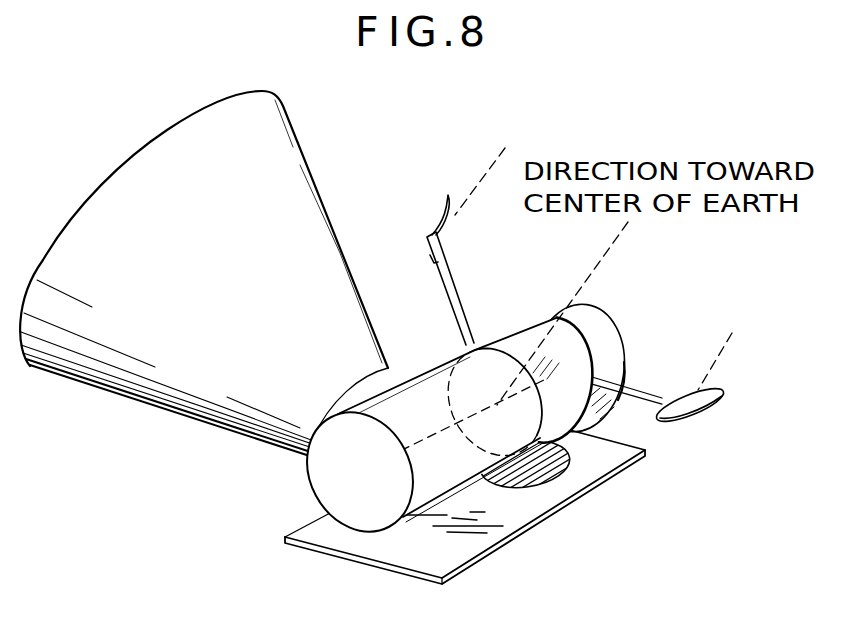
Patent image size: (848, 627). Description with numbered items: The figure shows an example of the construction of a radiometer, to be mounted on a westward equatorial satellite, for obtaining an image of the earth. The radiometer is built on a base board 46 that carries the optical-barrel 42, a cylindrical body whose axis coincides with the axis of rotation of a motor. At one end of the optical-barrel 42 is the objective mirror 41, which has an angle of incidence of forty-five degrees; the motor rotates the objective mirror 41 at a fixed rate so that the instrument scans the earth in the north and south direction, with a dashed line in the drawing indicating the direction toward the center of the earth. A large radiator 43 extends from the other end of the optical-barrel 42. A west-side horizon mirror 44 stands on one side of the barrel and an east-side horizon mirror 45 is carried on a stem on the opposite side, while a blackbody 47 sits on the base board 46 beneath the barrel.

The objective mirror 41 is at (503, 337).
The optical-barrel 42 is at (308, 478).
The radiator 43 is at (120, 167).
The west-side horizon mirror 44 is at (437, 212).
The east-side horizon mirror 45 is at (708, 410).
The base board 46 is at (505, 543).
The blackbody 47 is at (560, 482).